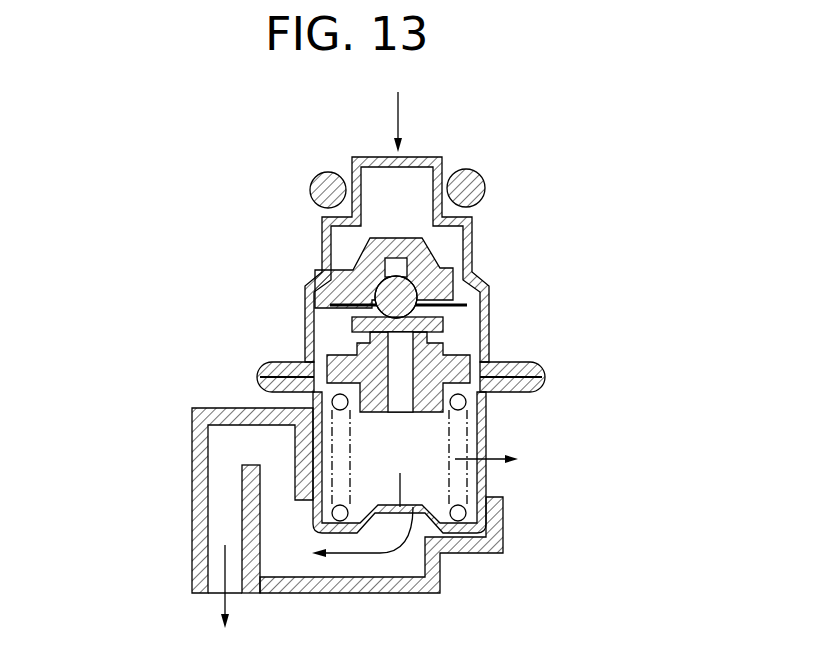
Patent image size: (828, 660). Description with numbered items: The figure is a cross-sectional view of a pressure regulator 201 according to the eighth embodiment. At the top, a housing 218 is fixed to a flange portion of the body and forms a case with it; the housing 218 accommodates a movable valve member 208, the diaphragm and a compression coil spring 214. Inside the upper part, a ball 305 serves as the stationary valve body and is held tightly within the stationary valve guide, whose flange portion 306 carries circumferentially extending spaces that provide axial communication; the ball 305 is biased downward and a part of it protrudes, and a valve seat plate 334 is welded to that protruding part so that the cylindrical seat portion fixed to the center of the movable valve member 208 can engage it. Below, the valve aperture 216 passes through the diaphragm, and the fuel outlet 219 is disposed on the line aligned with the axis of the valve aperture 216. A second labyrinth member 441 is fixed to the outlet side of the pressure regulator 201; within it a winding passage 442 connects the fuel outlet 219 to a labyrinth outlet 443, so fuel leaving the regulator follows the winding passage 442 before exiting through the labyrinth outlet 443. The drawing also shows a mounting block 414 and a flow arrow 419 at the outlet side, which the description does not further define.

The pressure regulator 201 is at (306, 261).
The movable valve member 208 is at (300, 395).
The compression coil spring 214 is at (464, 402).
The valve aperture 216 is at (400, 356).
The housing 218 is at (486, 507).
The fuel outlet 219 is at (443, 557).
The ball 305 is at (385, 297).
The flange portion 306 is at (370, 258).
The valve seat plate 334 is at (352, 322).
The mounting block 414 is at (505, 543).
The flow passage 419 is at (480, 447).
The second labyrinth member 441 is at (190, 477).
The winding passage 442 is at (283, 558).
The labyrinth outlet 443 is at (213, 597).